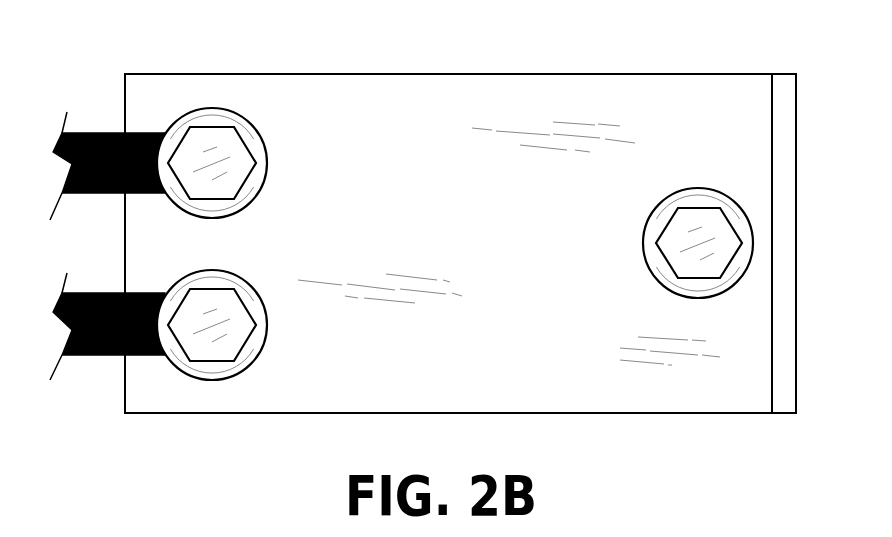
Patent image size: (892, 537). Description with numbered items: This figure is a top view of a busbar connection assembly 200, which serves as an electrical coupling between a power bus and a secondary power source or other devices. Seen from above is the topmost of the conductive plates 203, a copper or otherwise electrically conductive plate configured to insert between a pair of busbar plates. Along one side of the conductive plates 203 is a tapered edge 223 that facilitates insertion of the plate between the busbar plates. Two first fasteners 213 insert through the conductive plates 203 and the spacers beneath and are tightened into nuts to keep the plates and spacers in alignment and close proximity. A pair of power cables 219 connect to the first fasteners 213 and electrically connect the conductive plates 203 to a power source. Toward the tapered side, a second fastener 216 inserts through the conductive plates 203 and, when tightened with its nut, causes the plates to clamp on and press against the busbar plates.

The busbar connection assembly 200 is at (419, 272).
The conductive plate 203 is at (447, 246).
The first fastener 213 is at (230, 307).
The second fastener 216 is at (702, 227).
The power cable 219 is at (93, 133).
The tapered edge 223 is at (780, 125).